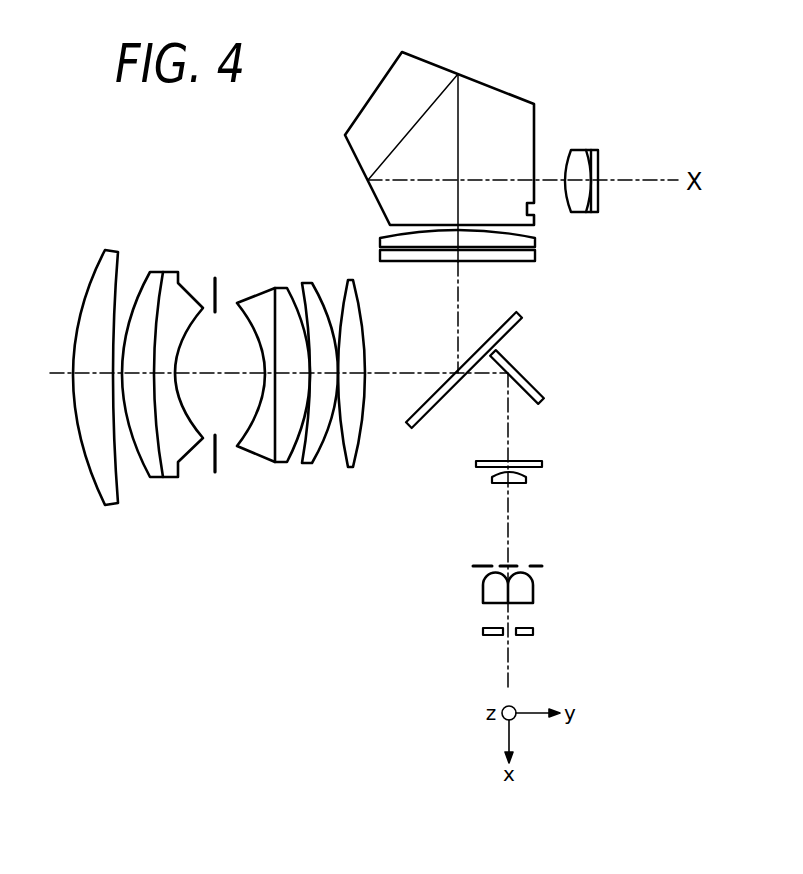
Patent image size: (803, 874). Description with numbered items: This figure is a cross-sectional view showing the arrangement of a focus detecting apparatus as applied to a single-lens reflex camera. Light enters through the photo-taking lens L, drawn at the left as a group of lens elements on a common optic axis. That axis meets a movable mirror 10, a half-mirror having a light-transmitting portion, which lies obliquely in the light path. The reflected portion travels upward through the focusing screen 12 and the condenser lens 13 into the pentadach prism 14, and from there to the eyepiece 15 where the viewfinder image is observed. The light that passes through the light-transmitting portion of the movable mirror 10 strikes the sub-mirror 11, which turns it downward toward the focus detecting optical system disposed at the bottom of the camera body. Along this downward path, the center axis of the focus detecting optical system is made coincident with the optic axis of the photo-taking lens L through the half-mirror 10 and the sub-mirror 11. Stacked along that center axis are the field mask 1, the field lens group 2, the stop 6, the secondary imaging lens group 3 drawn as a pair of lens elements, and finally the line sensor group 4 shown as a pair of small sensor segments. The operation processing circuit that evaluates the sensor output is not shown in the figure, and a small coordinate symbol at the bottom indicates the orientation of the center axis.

The photo-taking lens L is at (365, 505).
The field mask 1 is at (543, 463).
The field lens group 2 is at (527, 482).
The secondary imaging lens group 3 is at (535, 597).
The line sensor group 4 is at (533, 632).
The stop 6 is at (542, 566).
The movable mirror 10 is at (525, 323).
The sub-mirror 11 is at (532, 377).
The focusing screen 12 is at (535, 256).
The condenser lens 13 is at (535, 240).
The pentadach prism 14 is at (435, 63).
The eyepiece 15 is at (582, 148).